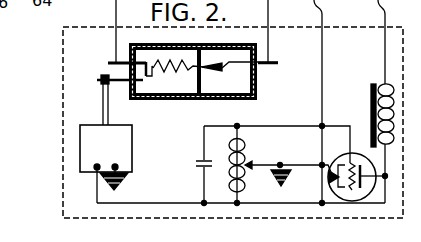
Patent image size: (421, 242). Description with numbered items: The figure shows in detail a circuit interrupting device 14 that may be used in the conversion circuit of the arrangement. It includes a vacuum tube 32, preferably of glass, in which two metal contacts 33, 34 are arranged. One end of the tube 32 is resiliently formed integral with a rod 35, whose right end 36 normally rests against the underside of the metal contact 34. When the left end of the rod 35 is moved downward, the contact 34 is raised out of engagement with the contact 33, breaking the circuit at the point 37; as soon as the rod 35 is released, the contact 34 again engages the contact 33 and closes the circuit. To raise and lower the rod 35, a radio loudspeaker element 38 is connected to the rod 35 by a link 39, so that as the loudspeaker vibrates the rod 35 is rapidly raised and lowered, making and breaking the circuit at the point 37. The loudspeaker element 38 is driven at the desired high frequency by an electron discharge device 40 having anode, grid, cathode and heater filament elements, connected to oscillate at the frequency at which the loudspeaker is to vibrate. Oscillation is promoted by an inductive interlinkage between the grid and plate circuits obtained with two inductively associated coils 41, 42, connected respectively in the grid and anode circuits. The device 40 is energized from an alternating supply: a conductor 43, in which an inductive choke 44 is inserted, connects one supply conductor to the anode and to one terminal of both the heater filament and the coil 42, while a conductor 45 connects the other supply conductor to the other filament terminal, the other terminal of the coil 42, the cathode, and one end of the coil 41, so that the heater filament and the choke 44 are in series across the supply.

The circuit interrupting device 14 is at (61, 100).
The vacuum tube 32 is at (258, 80).
The metal contact 33 is at (213, 74).
The metal contact 34 is at (194, 47).
The rod 35 is at (109, 86).
The right end of rod 36 is at (159, 70).
The point 37 is at (205, 97).
The radio loudspeaker element 38 is at (133, 140).
The link 39 is at (101, 86).
The electron discharge device 40 is at (340, 159).
The inductive coil 41 is at (243, 157).
The inductive coil 42 is at (241, 177).
The conductor 43 is at (384, 65).
The inductive choke 44 is at (382, 87).
The conductor 45 is at (323, 68).